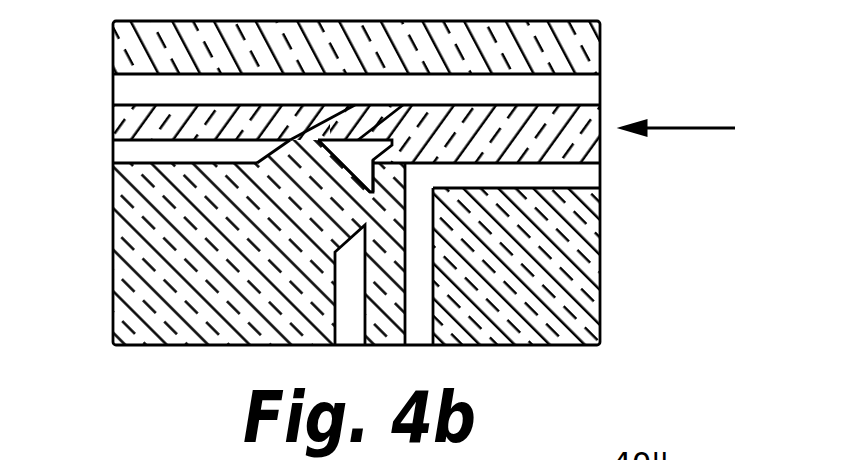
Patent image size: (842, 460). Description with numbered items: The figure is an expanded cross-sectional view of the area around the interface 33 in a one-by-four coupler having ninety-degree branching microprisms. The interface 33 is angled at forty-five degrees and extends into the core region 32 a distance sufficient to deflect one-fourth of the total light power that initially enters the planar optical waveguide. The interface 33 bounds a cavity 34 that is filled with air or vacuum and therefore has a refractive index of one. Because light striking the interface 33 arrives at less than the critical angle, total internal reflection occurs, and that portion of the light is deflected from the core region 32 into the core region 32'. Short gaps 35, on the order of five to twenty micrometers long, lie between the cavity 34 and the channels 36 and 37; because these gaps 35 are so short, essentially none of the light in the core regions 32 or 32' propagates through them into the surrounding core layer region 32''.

The cladding layer 32'' is at (368, 183).
The core region 32 is at (594, 122).
The core region 32' is at (419, 306).
The interface 33 is at (373, 167).
The cavity 34 is at (352, 153).
The gaps 35 is at (366, 205).
The channel 36 is at (348, 340).
The channel 37 is at (128, 153).